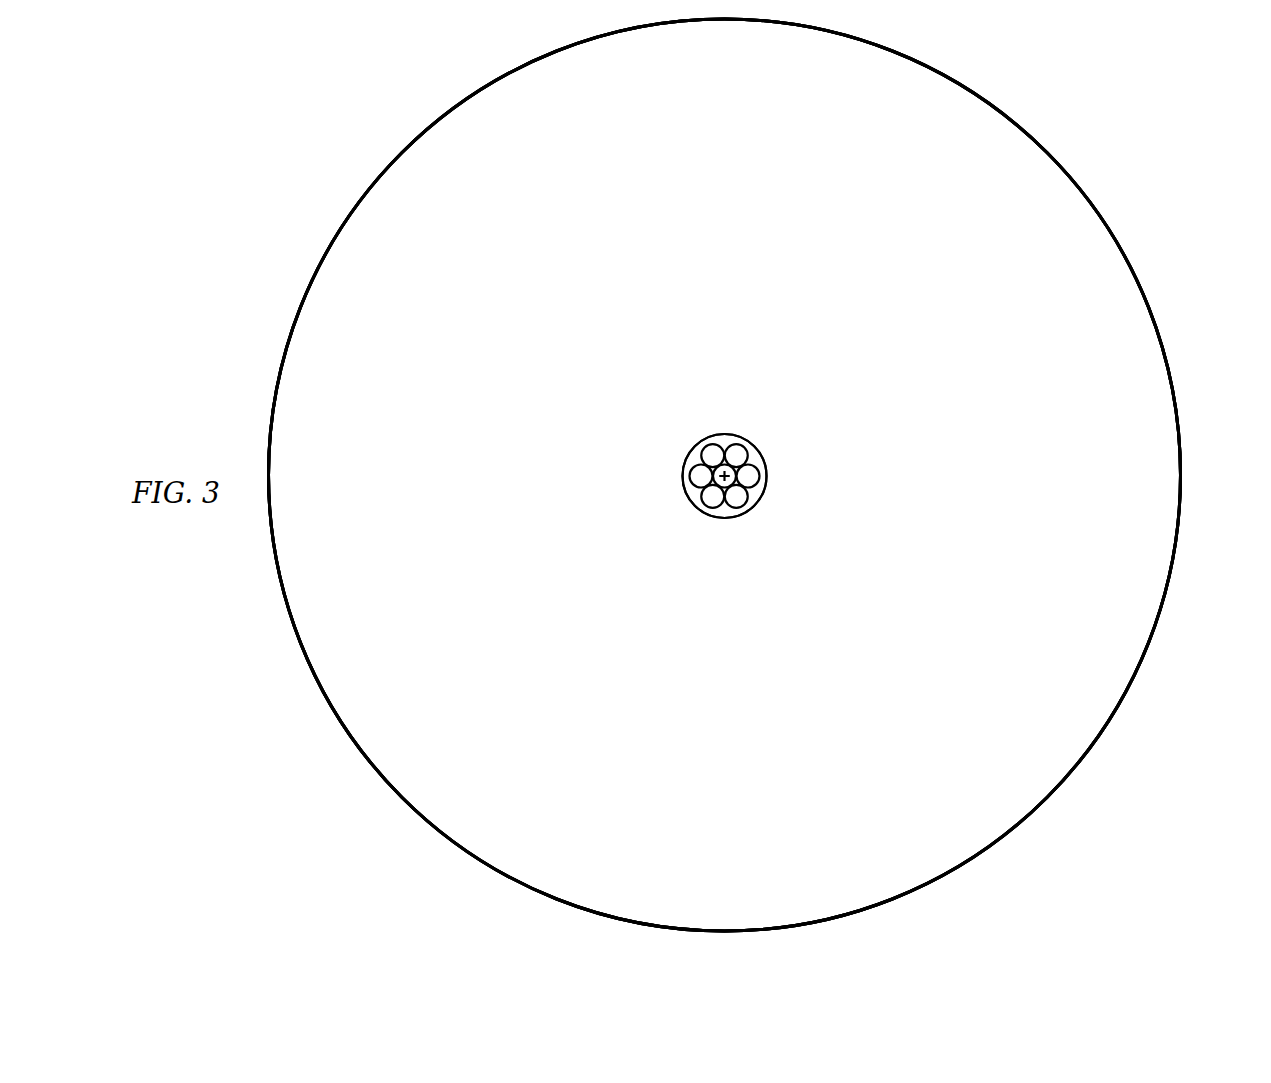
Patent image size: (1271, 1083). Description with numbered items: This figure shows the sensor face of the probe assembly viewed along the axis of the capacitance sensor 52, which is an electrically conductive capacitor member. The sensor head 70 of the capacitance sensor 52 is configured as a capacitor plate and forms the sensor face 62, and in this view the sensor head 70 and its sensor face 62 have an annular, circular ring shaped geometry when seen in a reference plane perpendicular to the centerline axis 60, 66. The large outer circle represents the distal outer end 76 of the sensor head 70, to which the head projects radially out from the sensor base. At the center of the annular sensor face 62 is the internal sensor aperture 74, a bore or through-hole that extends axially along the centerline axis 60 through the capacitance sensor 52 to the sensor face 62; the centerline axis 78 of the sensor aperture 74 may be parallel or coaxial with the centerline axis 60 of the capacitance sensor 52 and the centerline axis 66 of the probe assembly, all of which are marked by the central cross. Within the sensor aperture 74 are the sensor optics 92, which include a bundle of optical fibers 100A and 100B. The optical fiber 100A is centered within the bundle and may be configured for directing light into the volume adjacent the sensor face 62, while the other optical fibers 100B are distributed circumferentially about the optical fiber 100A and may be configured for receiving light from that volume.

The capacitance sensor 52 is at (731, 475).
The sensor head 70 is at (725, 475).
The distal outer end 76 is at (1163, 342).
The sensor face 62 is at (1028, 493).
The sensor optics 92 is at (724, 432).
The sensor aperture 74 is at (764, 451).
The optical fiber 100A is at (716, 468).
The optical fibers 100B is at (708, 446).
The centerline axis 60 is at (722, 479).
The centerline axis 66 is at (725, 476).
The centerline axis 78 is at (725, 476).